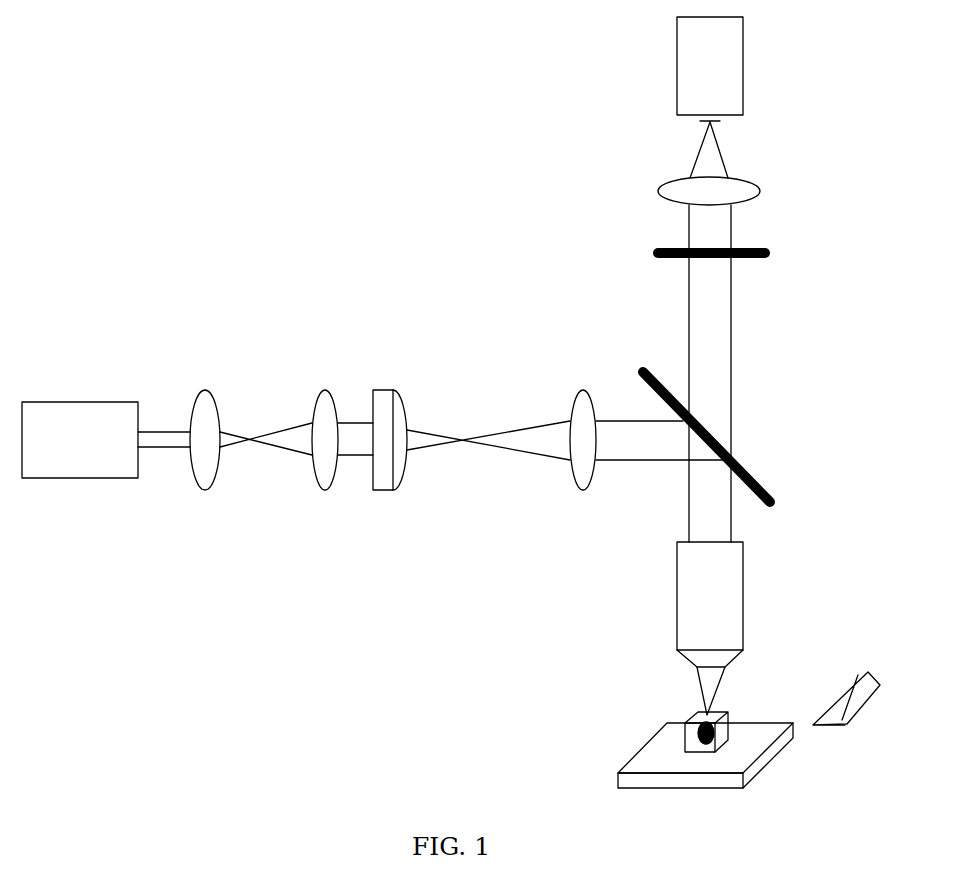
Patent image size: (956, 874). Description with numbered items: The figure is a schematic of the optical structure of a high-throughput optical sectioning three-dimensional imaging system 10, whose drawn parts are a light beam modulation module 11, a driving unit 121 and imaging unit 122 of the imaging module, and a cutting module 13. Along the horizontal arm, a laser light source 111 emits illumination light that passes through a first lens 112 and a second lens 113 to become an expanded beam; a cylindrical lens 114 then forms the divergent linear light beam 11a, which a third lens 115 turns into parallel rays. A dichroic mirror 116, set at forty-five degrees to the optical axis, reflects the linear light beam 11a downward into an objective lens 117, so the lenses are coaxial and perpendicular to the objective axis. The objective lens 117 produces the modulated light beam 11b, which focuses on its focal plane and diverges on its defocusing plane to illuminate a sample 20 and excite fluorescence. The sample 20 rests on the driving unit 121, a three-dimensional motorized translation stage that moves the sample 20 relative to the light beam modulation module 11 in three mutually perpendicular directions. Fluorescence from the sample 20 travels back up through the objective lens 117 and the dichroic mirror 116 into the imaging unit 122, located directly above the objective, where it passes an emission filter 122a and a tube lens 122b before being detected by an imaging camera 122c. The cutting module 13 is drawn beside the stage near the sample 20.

The high-throughput optical sectioning three-dimensional imaging system 10 is at (348, 115).
The light beam modulation module 11 is at (635, 508).
The linear light beam 11a is at (434, 431).
The modulated light beam 11b is at (718, 690).
The laser light source 111 is at (100, 458).
The first lens 112 is at (208, 467).
The second lens 113 is at (320, 467).
The cylindrical lens 114 is at (385, 467).
The third lens 115 is at (572, 460).
The dichroic mirror 116 is at (690, 435).
The objective lens 117 is at (703, 598).
The driving unit 121 is at (655, 765).
The imaging unit 122 is at (823, 110).
The emission filter 122a is at (745, 248).
The tube lens 122b is at (732, 193).
The imaging camera 122c is at (717, 85).
The cutting module 13 is at (857, 673).
The sample 20 is at (700, 712).